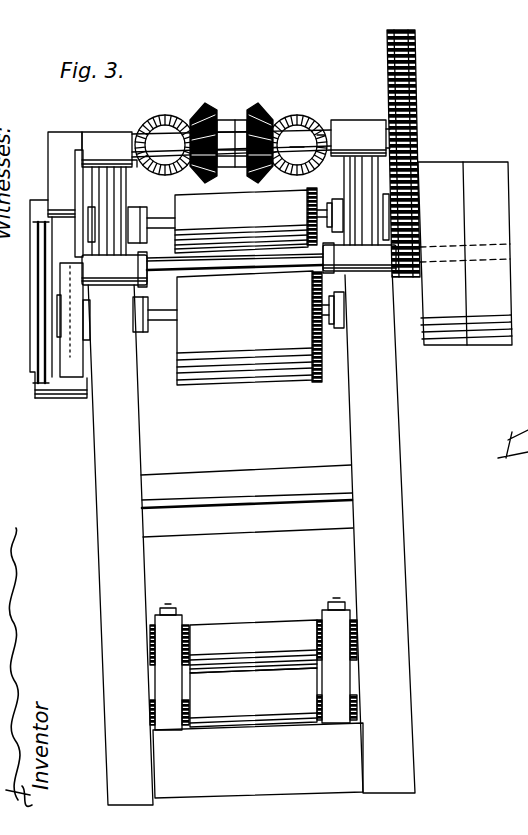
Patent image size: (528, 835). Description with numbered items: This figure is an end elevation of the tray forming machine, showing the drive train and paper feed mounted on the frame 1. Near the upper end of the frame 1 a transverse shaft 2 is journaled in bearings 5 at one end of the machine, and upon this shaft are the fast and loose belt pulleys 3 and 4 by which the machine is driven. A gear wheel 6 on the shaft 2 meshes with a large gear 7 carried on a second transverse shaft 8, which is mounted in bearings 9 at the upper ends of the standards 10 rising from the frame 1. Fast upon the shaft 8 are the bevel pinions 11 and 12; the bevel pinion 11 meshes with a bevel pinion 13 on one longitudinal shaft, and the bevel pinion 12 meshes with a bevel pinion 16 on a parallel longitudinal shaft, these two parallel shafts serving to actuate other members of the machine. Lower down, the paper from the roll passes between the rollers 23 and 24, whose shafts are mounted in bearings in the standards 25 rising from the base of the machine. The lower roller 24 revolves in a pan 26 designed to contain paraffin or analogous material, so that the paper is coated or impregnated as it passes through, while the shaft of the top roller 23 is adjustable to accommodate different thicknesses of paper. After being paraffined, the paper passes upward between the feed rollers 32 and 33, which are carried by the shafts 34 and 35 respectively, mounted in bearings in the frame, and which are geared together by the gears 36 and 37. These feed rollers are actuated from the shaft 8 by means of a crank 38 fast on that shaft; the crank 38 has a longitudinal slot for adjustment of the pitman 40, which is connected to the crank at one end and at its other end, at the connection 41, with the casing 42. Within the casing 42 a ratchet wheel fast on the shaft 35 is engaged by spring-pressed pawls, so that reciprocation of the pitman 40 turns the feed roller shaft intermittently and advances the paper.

The frame 1 is at (251, 540).
The transverse shaft 2 is at (244, 258).
The fast belt pulley 3 is at (465, 253).
The loose belt pulley 4 is at (474, 253).
The bearings 5 is at (115, 268).
The gear wheel 6 is at (409, 277).
The large gear 7 is at (383, 170).
The transverse shaft 8 is at (320, 134).
The bearings 9 is at (102, 138).
The standards 10 is at (100, 198).
The bevel pinion 11 is at (295, 128).
The bevel pinion 12 is at (209, 120).
The bevel pinion 13 is at (296, 147).
The bevel pinion 16 is at (165, 116).
The roller 23 is at (253, 631).
The roller 24 is at (253, 697).
The standards 25 is at (172, 635).
The pan 26 is at (258, 760).
The feed roller 32 is at (241, 221).
The feed roller 33 is at (245, 328).
The shaft 34 is at (151, 214).
The shaft 35 is at (161, 326).
The gear 36 is at (309, 212).
The gear 37 is at (313, 303).
The crank 38 is at (62, 156).
The pitman 40 is at (37, 295).
The connection 41 is at (36, 391).
The casing 42 is at (72, 325).